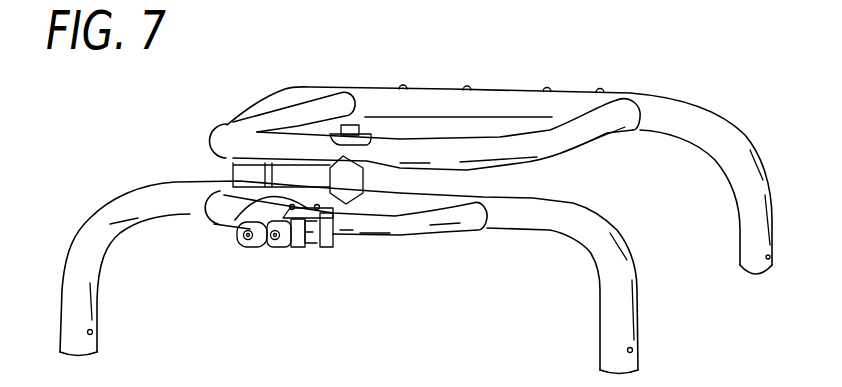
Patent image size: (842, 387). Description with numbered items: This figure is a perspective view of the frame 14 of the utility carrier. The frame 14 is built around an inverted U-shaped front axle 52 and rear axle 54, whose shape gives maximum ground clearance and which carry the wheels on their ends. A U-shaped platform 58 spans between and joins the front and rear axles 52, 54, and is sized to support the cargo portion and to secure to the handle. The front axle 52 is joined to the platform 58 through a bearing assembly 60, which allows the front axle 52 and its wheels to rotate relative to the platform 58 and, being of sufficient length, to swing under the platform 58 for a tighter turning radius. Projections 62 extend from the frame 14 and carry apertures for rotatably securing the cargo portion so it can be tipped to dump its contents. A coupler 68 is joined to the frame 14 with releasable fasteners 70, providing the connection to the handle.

The frame 14 is at (650, 68).
The front axle 52 is at (127, 200).
The rear axle 54 is at (275, 92).
The platform 58 is at (219, 126).
The bearing assembly 60 is at (352, 176).
The projections 62 is at (404, 88).
The coupler 68 is at (320, 247).
The releasable fasteners 70 is at (222, 212).